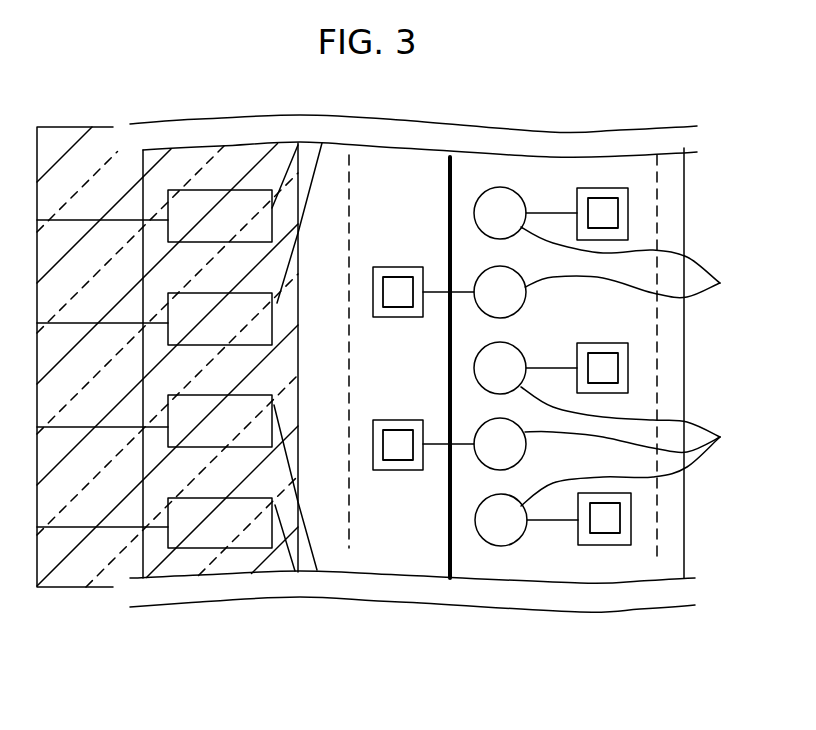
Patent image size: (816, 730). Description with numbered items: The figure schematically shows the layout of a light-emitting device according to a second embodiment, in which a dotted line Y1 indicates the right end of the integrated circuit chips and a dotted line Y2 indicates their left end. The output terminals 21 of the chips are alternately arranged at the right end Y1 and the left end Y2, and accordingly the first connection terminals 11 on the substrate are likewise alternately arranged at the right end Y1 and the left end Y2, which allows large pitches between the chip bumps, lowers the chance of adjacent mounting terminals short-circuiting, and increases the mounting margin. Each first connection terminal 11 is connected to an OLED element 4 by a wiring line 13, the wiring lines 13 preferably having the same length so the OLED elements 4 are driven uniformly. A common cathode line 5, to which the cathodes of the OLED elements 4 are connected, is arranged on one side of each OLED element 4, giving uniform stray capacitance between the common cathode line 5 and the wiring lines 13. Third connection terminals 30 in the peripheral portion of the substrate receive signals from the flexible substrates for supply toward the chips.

The OLED element 4 is at (631, 366).
The common cathode line 5 is at (452, 175).
The first connection terminal 11 is at (397, 267).
The wiring line 13 is at (436, 292).
The output terminal 21 is at (396, 307).
The third connection terminal 30 is at (262, 225).
The dotted line indicating right end of integrated circuit chips Y1 is at (658, 557).
The dotted line indicating left end of integrated circuit chips Y2 is at (350, 545).